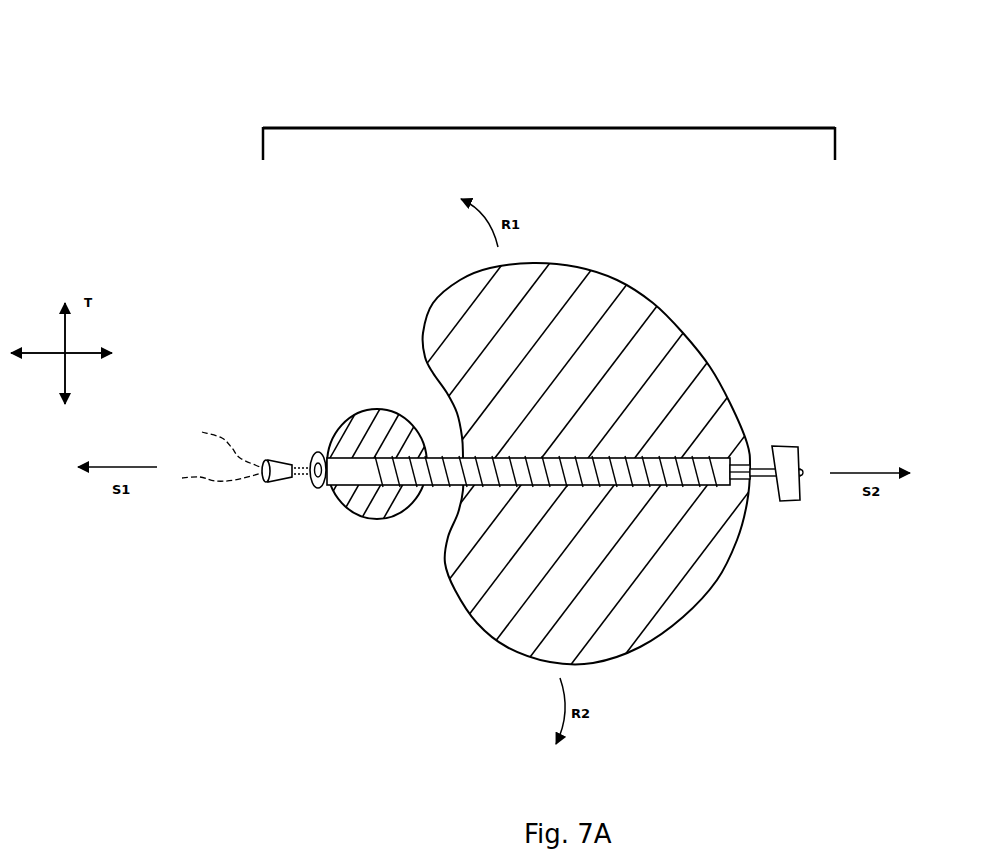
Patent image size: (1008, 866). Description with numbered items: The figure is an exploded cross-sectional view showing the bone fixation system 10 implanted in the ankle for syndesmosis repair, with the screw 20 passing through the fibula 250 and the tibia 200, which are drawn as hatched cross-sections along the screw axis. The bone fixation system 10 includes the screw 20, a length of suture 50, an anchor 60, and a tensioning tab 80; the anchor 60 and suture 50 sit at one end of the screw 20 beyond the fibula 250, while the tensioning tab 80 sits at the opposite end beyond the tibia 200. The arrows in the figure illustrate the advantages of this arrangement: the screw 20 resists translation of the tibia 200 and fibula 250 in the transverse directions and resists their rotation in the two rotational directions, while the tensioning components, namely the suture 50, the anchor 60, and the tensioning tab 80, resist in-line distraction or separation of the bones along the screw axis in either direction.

The bone fixation system 10 is at (213, 74).
The screw 20 is at (428, 508).
The suture 50 is at (217, 485).
The anchor 60 is at (277, 458).
The tensioning tab 80 is at (785, 445).
The tibia 200 is at (658, 327).
The fibula 250 is at (370, 410).